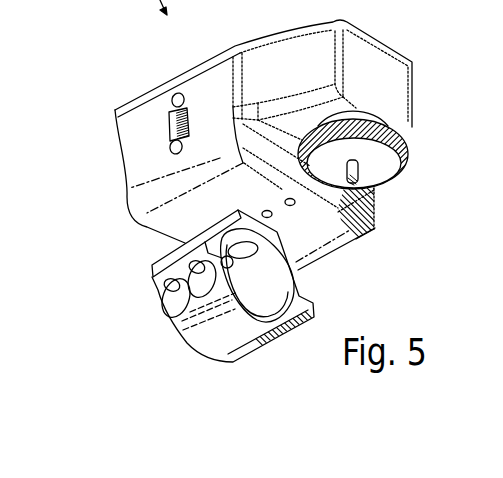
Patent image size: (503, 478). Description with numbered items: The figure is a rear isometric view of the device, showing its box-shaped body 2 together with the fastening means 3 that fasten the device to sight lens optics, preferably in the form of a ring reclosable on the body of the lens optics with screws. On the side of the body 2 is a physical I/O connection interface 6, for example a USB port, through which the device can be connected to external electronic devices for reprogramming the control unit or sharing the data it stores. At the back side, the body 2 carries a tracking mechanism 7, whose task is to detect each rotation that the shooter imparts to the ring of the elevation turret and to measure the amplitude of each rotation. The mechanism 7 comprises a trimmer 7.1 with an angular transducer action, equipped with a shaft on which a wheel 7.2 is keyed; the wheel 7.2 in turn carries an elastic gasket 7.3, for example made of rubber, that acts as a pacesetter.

The box-shaped body 2 is at (128, 197).
The fastening means 3 is at (192, 332).
The physical I/O connection interface 6 is at (176, 128).
The tracking mechanism 7 is at (355, 195).
The trimmer 7.1 is at (351, 186).
The wheel 7.2 is at (380, 157).
The elastic gasket 7.3 is at (406, 166).